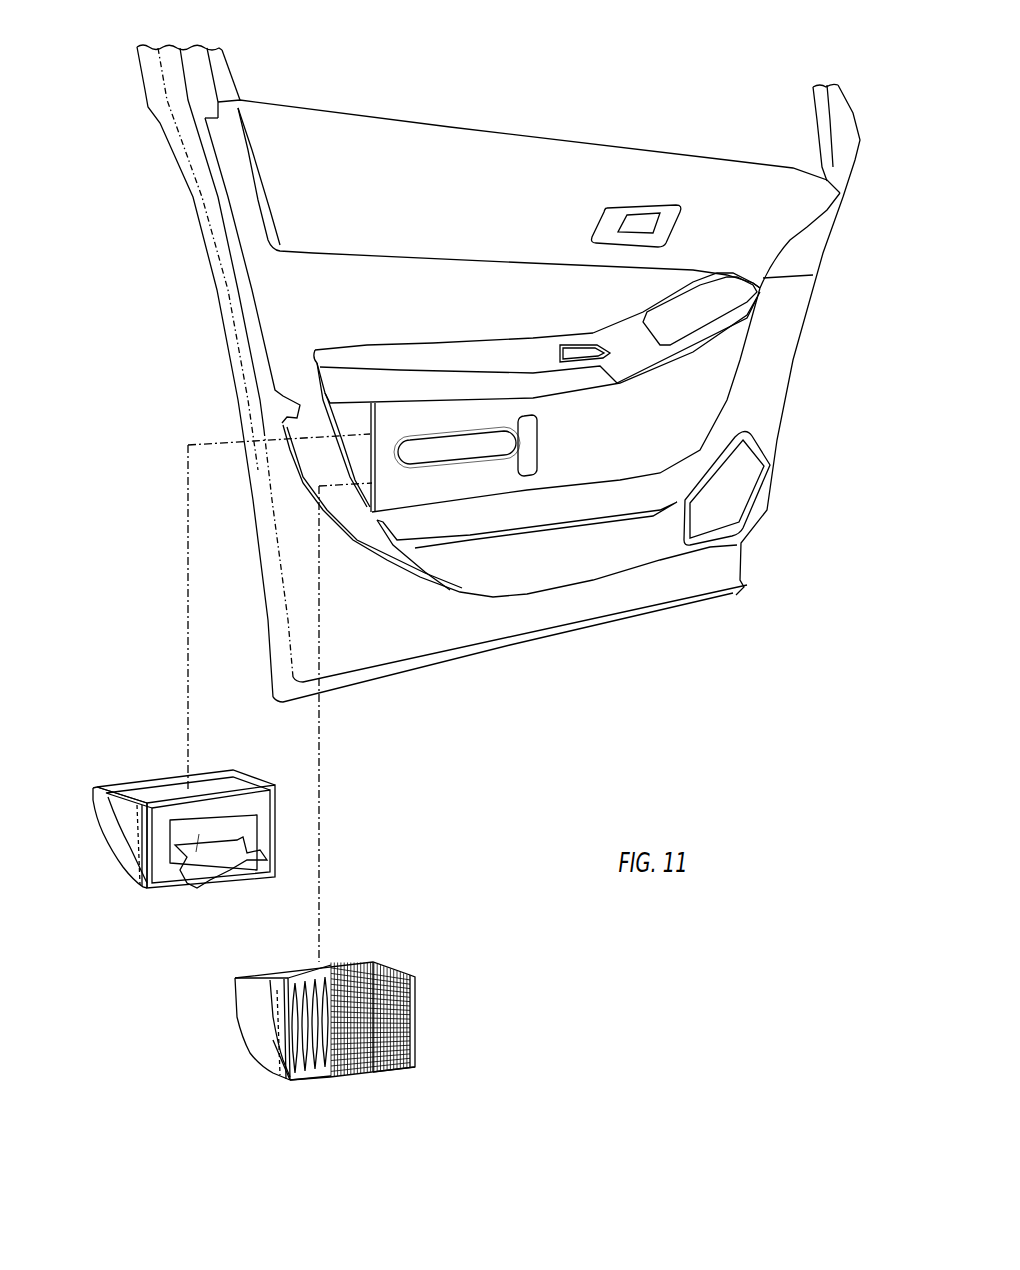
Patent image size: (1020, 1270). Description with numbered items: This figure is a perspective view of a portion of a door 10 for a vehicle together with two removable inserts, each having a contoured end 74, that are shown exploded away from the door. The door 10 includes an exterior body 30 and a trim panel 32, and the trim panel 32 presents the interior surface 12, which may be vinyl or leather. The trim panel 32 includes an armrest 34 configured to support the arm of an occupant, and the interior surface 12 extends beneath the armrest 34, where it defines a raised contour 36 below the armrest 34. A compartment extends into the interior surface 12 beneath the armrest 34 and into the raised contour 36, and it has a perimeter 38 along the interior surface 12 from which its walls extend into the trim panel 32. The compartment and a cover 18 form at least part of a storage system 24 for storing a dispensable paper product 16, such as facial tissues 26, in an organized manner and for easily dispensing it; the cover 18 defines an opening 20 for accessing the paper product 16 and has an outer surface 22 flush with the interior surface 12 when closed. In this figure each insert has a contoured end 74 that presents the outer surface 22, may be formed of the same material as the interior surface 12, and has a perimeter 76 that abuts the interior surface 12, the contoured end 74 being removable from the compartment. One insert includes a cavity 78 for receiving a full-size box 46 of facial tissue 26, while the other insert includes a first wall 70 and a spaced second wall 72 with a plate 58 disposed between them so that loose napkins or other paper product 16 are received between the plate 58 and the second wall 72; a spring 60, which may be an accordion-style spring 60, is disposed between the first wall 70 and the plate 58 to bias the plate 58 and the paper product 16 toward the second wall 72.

The door 10 is at (691, 65).
The interior surface 12 is at (619, 458).
The dispensable paper product 16 is at (307, 954).
The facial tissues 26 is at (197, 878).
The cover 18 is at (115, 822).
The opening 20 is at (452, 467).
The outer surface 22 is at (143, 810).
The storage system 24 is at (455, 938).
The exterior body 30 is at (222, 311).
The trim panel 32 is at (520, 290).
The armrest 34 is at (463, 357).
The raised contour 36 is at (690, 383).
The perimeter 38 is at (333, 432).
The full-size box 46 is at (220, 788).
The plate 58 is at (324, 1060).
The spring 60 is at (292, 977).
The first wall 70 is at (282, 1047).
The second wall 72 is at (417, 990).
The contoured end 74 is at (113, 857).
The perimeter 76 is at (142, 863).
The cavity 78 is at (157, 778).